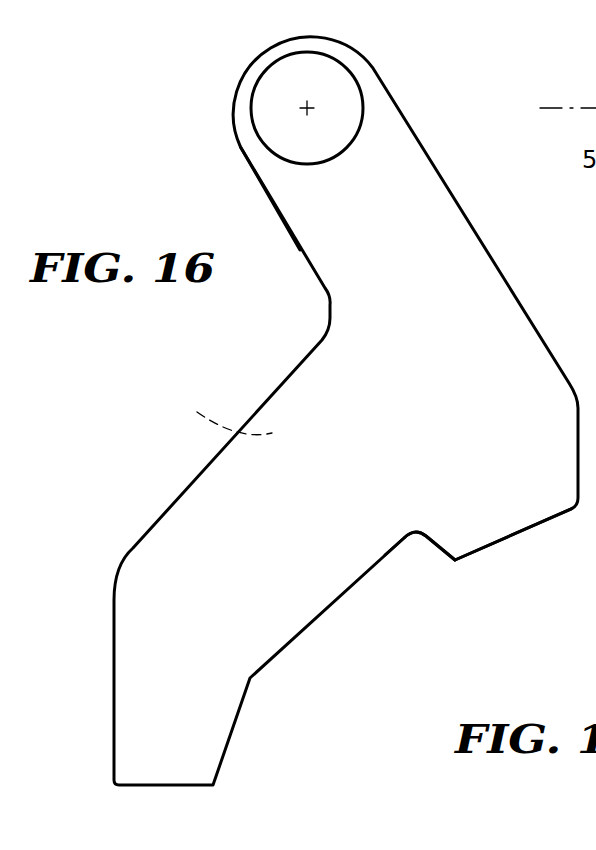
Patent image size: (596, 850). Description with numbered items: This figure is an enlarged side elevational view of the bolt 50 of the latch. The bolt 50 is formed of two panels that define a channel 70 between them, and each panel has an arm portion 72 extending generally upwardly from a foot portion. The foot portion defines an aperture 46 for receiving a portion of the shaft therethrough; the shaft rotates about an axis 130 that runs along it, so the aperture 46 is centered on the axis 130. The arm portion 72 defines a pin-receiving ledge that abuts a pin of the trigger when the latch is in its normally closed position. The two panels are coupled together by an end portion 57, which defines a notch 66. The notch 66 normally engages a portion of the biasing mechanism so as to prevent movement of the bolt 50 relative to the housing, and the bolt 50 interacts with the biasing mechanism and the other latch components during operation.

The bolt 50 is at (272, 383).
The aperture 46 is at (341, 62).
The axis 130 is at (306, 107).
The arm portion 72 is at (293, 192).
The channel 70 is at (219, 410).
The notch 66 is at (423, 535).
The end portion 57 is at (513, 527).